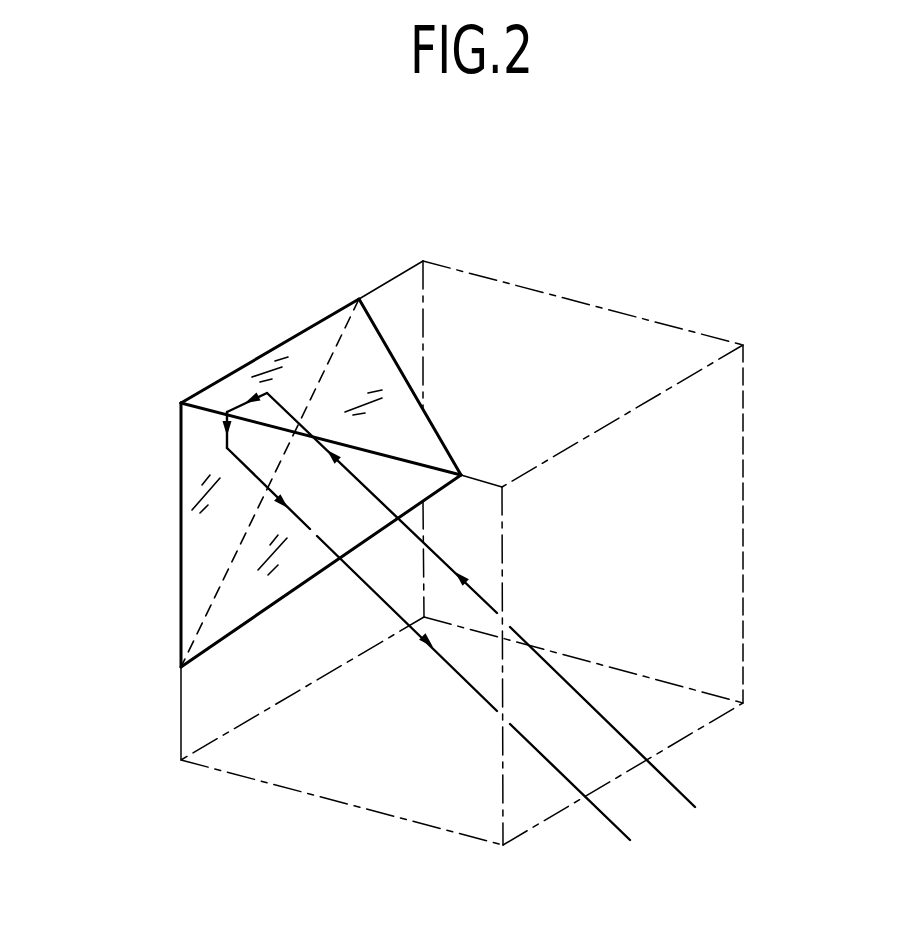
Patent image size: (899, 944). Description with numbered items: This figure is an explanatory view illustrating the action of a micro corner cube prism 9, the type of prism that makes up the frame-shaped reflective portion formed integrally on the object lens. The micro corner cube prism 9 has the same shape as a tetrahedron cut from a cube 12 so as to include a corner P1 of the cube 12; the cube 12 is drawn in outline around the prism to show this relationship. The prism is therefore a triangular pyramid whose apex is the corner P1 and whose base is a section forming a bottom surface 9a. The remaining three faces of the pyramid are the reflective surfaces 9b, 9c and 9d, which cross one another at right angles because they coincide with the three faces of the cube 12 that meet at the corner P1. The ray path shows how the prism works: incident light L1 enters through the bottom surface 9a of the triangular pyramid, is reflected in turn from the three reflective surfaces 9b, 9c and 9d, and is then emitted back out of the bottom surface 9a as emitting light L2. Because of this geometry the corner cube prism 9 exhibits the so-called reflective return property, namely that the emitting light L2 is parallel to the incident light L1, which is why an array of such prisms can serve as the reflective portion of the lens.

The micro corner cube prism 9 is at (350, 296).
The bottom surface 9a is at (322, 573).
The reflective surface 9b is at (313, 342).
The reflective surface 9c is at (180, 442).
The reflective surface 9d is at (228, 613).
The corner P1 is at (180, 402).
The incident light L1 is at (590, 703).
The emitting light L2 is at (555, 770).
The cube 12 is at (705, 733).